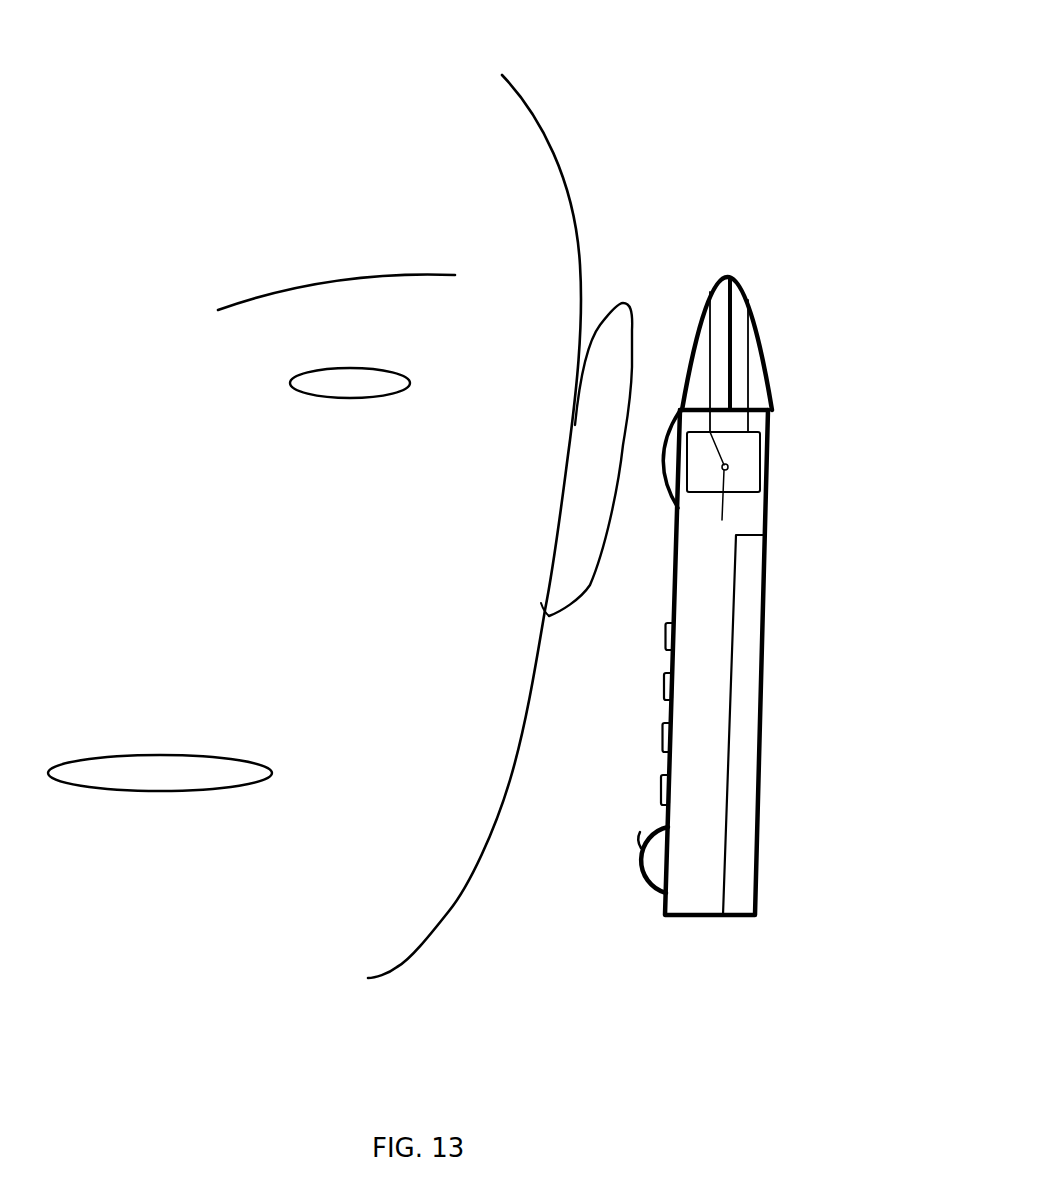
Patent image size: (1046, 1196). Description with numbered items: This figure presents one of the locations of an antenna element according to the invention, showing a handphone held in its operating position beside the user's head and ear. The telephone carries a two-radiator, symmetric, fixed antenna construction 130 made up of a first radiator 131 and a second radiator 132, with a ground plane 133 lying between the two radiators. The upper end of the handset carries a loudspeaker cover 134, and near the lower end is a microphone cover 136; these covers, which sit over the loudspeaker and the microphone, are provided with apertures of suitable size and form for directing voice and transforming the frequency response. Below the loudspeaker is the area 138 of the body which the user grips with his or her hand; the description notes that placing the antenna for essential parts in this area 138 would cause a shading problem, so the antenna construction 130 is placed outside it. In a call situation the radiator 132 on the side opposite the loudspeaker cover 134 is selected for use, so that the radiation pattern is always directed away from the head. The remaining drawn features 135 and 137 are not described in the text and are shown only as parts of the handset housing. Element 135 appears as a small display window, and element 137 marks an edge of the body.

The symmetric fixed antenna construction 130 is at (763, 291).
The radiator 131 is at (712, 285).
The radiator 132 is at (748, 343).
The ground plane 133 is at (727, 277).
The loudspeaker cover 134 is at (663, 495).
The display 135 is at (742, 470).
The microphone cover 136 is at (641, 871).
The housing edge 137 is at (768, 402).
The body area gripped by the hand 138 is at (712, 732).